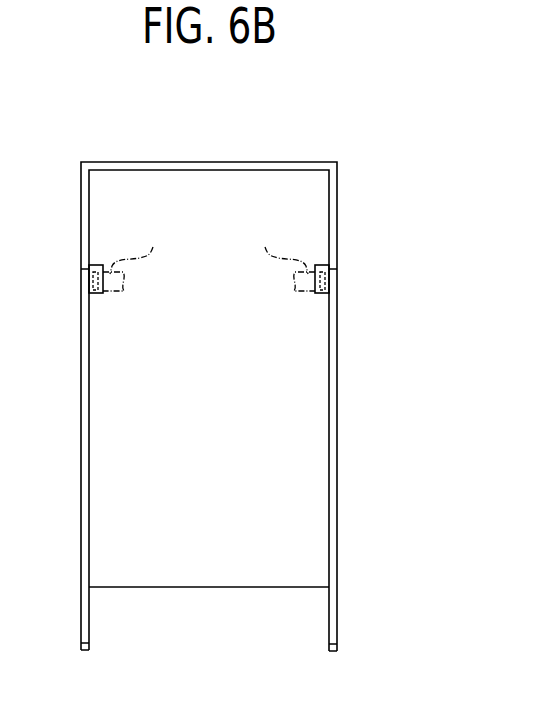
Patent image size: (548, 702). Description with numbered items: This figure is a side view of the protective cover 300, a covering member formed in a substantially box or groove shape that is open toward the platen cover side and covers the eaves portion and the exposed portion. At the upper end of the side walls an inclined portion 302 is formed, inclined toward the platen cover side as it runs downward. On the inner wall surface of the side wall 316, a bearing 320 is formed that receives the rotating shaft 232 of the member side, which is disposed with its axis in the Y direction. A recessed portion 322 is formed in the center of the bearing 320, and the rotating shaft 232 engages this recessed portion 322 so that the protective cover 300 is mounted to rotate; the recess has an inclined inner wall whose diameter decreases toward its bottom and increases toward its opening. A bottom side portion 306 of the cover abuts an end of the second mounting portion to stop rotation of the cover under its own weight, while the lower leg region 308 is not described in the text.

The protective cover 300 is at (304, 161).
The side wall 316 is at (82, 412).
The bottom side portion 306 is at (203, 588).
The leg lower portion 308 is at (81, 620).
The inclined portion 302 is at (83, 652).
The bearing 320 is at (98, 293).
The recessed portion 322 is at (100, 265).
The rotating shaft 232 is at (209, 257).